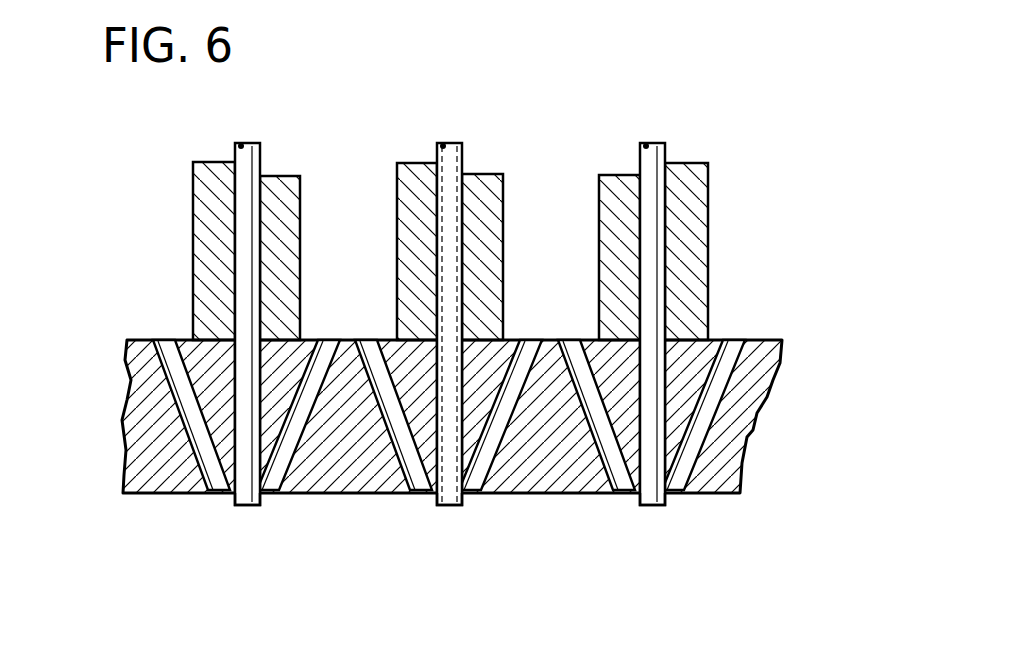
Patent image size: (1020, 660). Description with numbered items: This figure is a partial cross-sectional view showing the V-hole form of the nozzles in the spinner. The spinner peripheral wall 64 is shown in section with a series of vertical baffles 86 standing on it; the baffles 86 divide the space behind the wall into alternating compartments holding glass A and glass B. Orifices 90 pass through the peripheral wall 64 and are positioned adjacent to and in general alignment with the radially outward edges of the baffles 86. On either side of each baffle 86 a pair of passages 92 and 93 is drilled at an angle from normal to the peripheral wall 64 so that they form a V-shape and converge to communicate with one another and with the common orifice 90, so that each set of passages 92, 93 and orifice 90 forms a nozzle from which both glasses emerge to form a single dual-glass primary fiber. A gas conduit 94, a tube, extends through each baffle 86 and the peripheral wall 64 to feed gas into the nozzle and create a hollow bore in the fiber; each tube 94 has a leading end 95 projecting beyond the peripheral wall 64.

The spinner peripheral wall 64 is at (142, 381).
The vertical baffle 86 is at (300, 220).
The orifice 90 is at (227, 497).
The passage 92 is at (207, 448).
The passage 93 is at (267, 468).
The gas conduit 94 is at (236, 157).
The leading end 95 is at (243, 506).